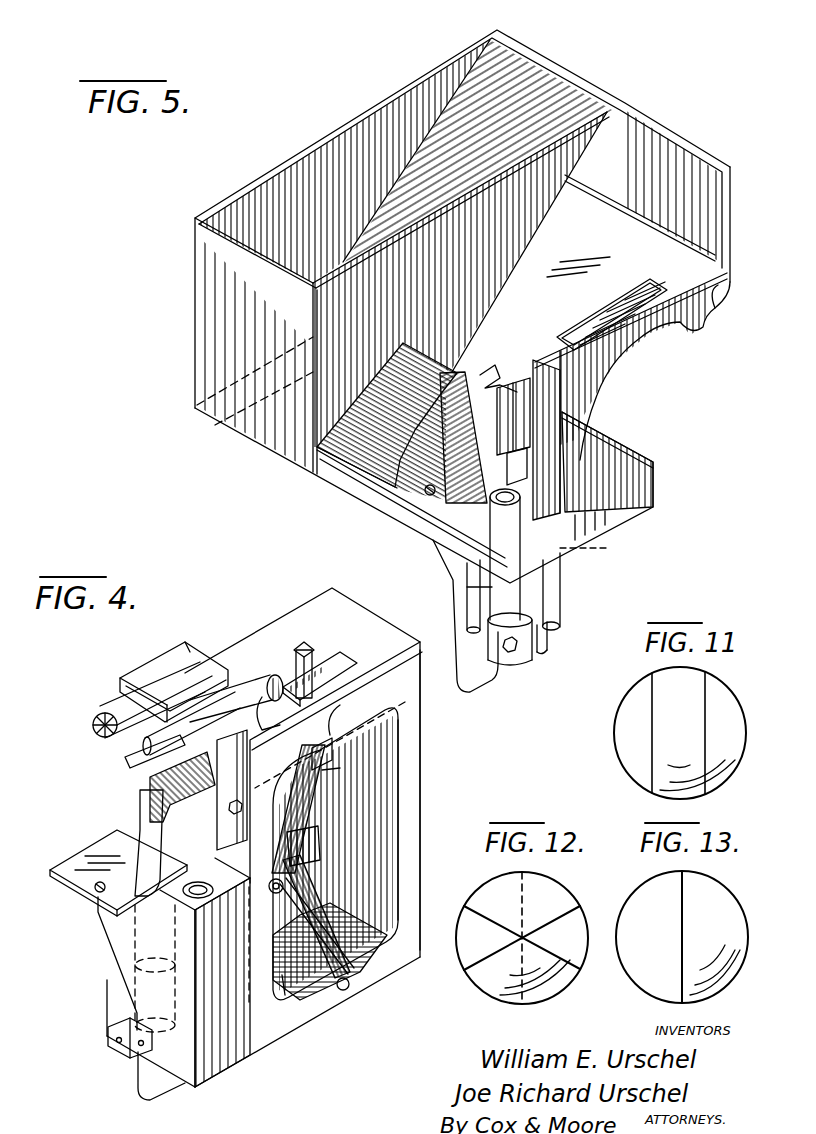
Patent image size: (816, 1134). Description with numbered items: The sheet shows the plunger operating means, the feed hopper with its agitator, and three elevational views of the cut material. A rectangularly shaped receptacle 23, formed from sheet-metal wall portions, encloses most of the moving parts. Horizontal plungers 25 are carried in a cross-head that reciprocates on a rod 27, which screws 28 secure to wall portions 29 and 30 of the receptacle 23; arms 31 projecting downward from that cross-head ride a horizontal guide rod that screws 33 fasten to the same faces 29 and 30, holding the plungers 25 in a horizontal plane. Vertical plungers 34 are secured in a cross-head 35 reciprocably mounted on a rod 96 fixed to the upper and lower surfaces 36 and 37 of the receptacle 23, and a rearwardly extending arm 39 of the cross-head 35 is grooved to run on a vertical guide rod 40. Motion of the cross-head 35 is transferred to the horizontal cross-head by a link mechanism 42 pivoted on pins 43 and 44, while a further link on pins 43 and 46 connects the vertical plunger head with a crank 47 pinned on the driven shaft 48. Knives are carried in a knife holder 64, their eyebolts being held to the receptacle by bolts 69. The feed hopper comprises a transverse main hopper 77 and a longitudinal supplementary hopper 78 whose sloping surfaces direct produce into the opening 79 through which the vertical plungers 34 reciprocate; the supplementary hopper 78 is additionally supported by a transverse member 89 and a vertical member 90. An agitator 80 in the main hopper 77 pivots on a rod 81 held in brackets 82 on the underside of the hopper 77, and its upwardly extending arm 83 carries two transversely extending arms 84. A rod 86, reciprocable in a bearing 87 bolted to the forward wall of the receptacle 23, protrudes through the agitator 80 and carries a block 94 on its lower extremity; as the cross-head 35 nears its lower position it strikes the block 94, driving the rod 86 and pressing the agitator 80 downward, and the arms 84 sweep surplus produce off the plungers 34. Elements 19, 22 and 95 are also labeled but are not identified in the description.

In FIG. 5, the hopper side wall 19 is at (372, 103).
In FIG. 5, the supplementary hopper 78 is at (547, 92).
In FIG. 5, the transverse member 89 is at (672, 137).
In FIG. 5, the vertical member 90 is at (730, 218).
In FIG. 5, the inclined chute plate 95 is at (483, 318).
In FIG. 5, the transversely extending arms 84 is at (487, 385).
In FIG. 4, the transversely extending arms 84 is at (140, 780).
In FIG. 5, the upwardly extending arm 83 is at (473, 417).
In FIG. 4, the upwardly extending arm 83 is at (138, 812).
In FIG. 5, the opening 79 is at (585, 460).
In FIG. 5, the main hopper 77 is at (614, 458).
In FIG. 5, the agitator 80 is at (403, 478).
In FIG. 4, the agitator 80 is at (92, 858).
In FIG. 5, the brackets 82 is at (599, 547).
In FIG. 5, the rod 81 is at (562, 562).
In FIG. 5, the rod 86 is at (440, 568).
In FIG. 4, the rod 86 is at (98, 940).
In FIG. 5, the vertical plungers 34 is at (515, 592).
In FIG. 4, the vertical plungers 34 is at (118, 970).
In FIG. 5, the rod 96 is at (548, 638).
In FIG. 5, the block 94 is at (519, 661).
In FIG. 5, the receptacle 23 is at (712, 320).
In FIG. 4, the receptacle 23 is at (418, 856).
In FIG. 4, the knife holder 64 is at (136, 663).
In FIG. 4, the rod 22 is at (263, 678).
In FIG. 4, the horizontal plungers 25 is at (130, 713).
In FIG. 4, the bearing 87 is at (95, 890).
In FIG. 4, the bolts 69 is at (118, 1040).
In FIG. 4, the cross-head 35 is at (248, 1062).
In FIG. 4, the upper surface 36 is at (309, 604).
In FIG. 4, the rod 27 is at (337, 720).
In FIG. 4, the screws 28 is at (265, 746).
In FIG. 4, the screws 33 is at (233, 797).
In FIG. 4, the wall portion 29 is at (337, 720).
In FIG. 4, the pin 44 is at (335, 745).
In FIG. 4, the arms 31 is at (342, 768).
In FIG. 4, the link mechanism 42 is at (312, 790).
In FIG. 4, the wall portion 30 is at (385, 809).
In FIG. 4, the rearwardly extending arm 39 is at (322, 846).
In FIG. 4, the pin 43 is at (285, 879).
In FIG. 4, the vertical guide rod 40 is at (290, 894).
In FIG. 4, the lower surface 37 is at (330, 951).
In FIG. 4, the pin 46 is at (352, 990).
In FIG. 4, the crank 47 is at (312, 975).
In FIG. 4, the shaft 48 is at (282, 985).